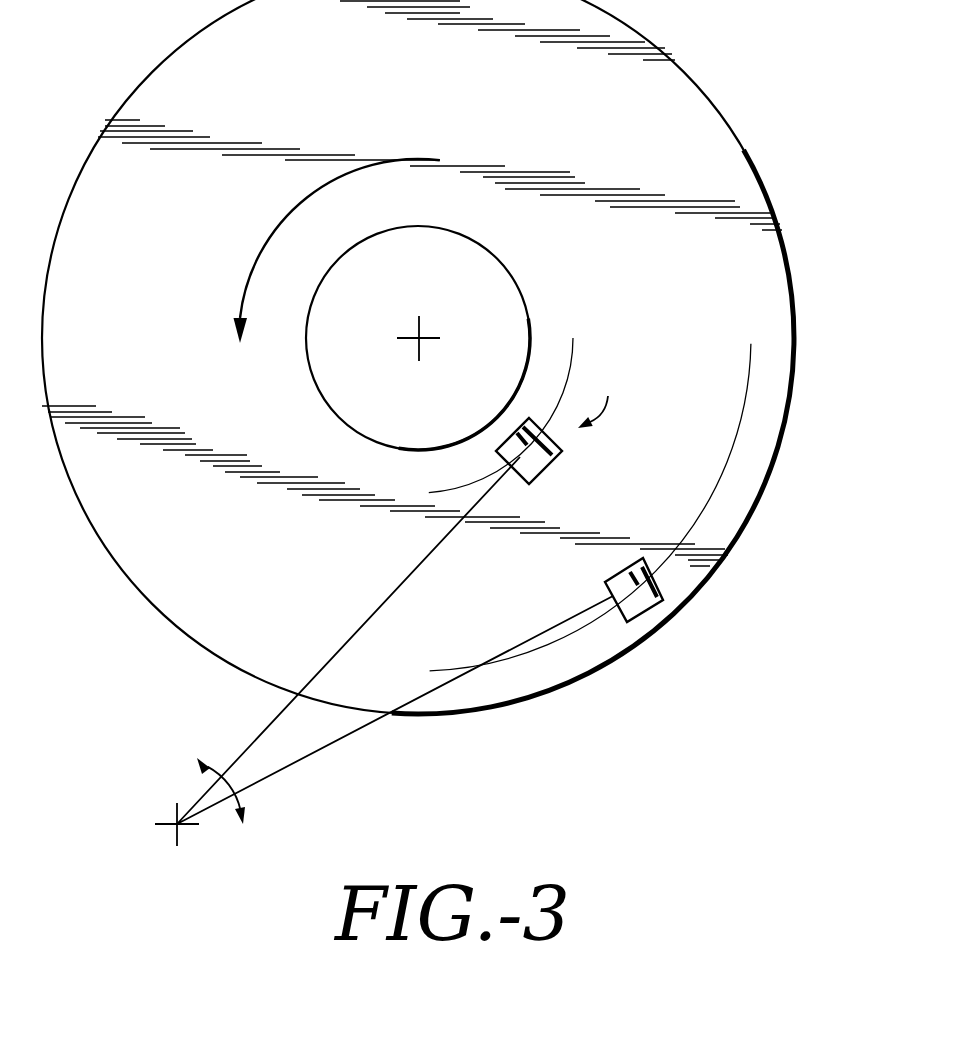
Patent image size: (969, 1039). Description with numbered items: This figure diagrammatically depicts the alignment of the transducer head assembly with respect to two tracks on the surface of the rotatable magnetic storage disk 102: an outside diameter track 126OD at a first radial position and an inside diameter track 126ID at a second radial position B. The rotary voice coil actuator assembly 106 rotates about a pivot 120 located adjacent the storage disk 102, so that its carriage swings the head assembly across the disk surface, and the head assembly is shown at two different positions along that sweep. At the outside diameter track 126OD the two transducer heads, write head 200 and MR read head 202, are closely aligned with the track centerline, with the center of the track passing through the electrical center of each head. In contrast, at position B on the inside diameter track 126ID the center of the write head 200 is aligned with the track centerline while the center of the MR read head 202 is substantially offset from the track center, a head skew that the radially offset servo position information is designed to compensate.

The rotatable magnetic storage disk 102 is at (749, 157).
The inside diameter track 126ID is at (573, 338).
The outside diameter track 126OD is at (748, 355).
The write head 200 is at (645, 562).
The MR read head 202 is at (512, 470).
The pivot 120 is at (176, 822).
The rotary voice coil actuator assembly 106 is at (257, 740).
The second radial position B is at (596, 394).